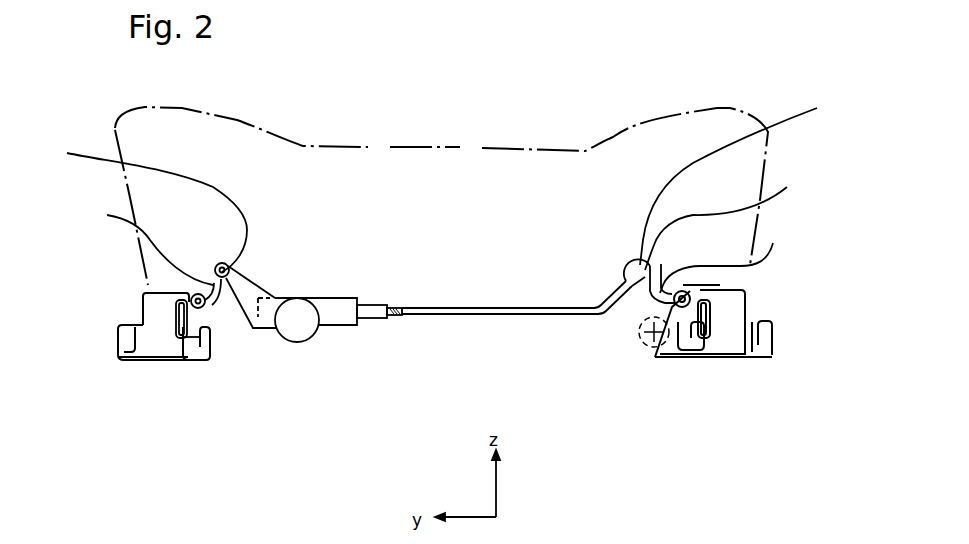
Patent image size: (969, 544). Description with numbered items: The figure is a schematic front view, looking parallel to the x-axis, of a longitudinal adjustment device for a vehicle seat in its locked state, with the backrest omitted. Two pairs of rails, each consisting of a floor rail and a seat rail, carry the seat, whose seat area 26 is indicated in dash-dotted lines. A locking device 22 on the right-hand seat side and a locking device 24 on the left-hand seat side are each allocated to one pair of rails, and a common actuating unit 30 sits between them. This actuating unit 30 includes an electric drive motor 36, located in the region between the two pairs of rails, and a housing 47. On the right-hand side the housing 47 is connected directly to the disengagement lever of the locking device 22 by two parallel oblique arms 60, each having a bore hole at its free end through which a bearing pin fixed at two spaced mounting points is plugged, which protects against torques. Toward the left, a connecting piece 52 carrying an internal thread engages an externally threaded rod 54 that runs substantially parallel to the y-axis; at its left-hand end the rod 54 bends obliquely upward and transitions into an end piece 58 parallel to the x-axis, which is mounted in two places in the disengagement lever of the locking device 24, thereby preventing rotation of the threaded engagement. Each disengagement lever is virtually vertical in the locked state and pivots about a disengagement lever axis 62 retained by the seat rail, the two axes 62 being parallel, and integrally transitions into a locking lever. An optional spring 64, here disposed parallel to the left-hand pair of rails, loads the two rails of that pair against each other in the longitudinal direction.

The locking device of the right-hand seat side 22 is at (165, 303).
The locking device of the left-hand seat side 24 is at (723, 307).
The seat area 26 is at (445, 173).
The actuating unit 30 is at (253, 417).
The electric drive motor 36 is at (303, 328).
The housing 47 is at (345, 313).
The connecting piece 52 is at (384, 312).
The rod 54 is at (500, 312).
The end piece 58 is at (720, 236).
The oblique arms 60 is at (238, 290).
The disengagement lever axis 62 is at (207, 306).
The spring 64 is at (643, 330).